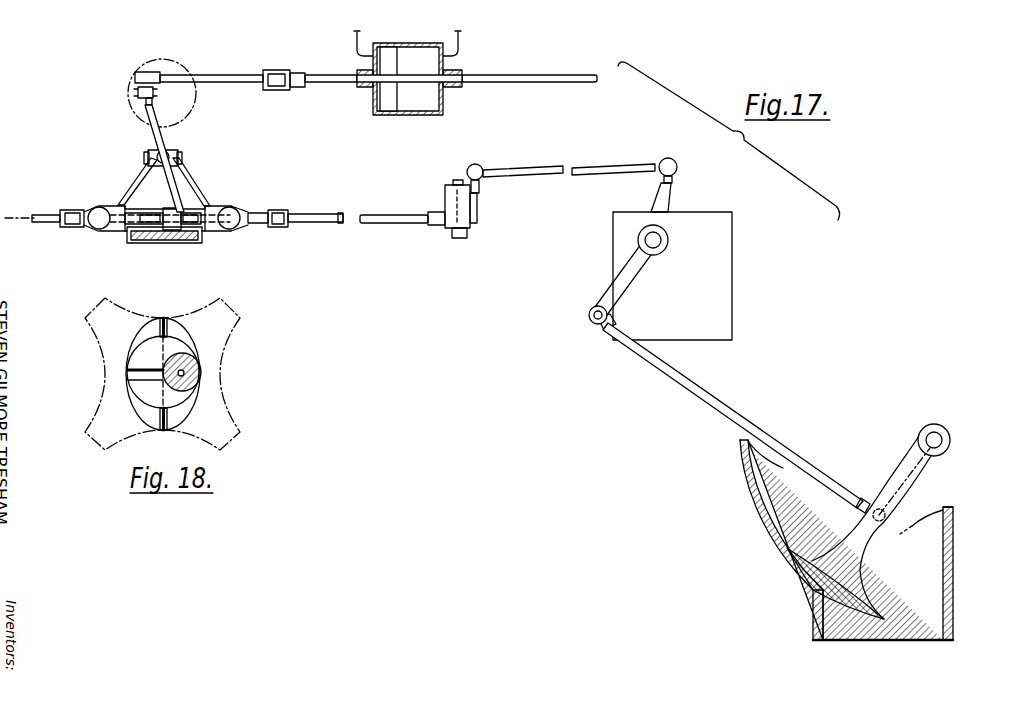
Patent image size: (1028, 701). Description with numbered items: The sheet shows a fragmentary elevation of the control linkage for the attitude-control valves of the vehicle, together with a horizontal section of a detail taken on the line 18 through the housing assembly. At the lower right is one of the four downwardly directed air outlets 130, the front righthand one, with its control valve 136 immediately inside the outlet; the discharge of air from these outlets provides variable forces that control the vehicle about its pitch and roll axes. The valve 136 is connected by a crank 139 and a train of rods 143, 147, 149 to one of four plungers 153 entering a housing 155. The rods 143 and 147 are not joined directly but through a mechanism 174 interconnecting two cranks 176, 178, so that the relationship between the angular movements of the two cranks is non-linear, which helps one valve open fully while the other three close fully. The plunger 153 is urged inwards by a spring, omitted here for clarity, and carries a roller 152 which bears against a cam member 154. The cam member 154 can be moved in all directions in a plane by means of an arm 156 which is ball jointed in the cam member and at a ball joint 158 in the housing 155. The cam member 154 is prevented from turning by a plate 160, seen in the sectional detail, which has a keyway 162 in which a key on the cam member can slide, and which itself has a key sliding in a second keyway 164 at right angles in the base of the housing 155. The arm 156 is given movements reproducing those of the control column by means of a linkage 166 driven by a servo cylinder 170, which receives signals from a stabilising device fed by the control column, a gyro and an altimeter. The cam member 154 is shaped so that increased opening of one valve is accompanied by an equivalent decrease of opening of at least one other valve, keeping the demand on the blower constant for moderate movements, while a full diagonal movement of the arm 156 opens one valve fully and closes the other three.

In FIG. 17, the section line 18— 18 is at (18, 213).
In FIG. 17, the downwardly directed outlet 130 is at (928, 636).
In FIG. 17, the control valve 136 is at (830, 600).
In FIG. 17, the crank 139 is at (908, 480).
In FIG. 17, the rod 143 is at (708, 392).
In FIG. 17, the rod 147 is at (534, 167).
In FIG. 17, the rod 149 is at (384, 214).
In FIG. 17, the roller 152 is at (178, 238).
In FIG. 17, the plunger 153 is at (248, 212).
In FIG. 17, the cam member 154 is at (163, 206).
In FIG. 18, the cam member 154 is at (200, 359).
In FIG. 17, the housing 155 is at (203, 184).
In FIG. 18, the housing 155 is at (213, 417).
In FIG. 17, the arm 156 is at (157, 135).
In FIG. 17, the ball joint 158 is at (172, 155).
In FIG. 17, the plate 160 is at (128, 242).
In FIG. 18, the plate 160 is at (137, 353).
In FIG. 18, the keyway 162 is at (132, 377).
In FIG. 18, the second keyway 164 is at (160, 329).
In FIG. 17, the linkage 166 is at (542, 80).
In FIG. 17, the servo cylinder 170 is at (433, 115).
In FIG. 17, the mechanism 174 is at (732, 262).
In FIG. 17, the crank 176 is at (668, 193).
In FIG. 17, the crank 178 is at (625, 273).